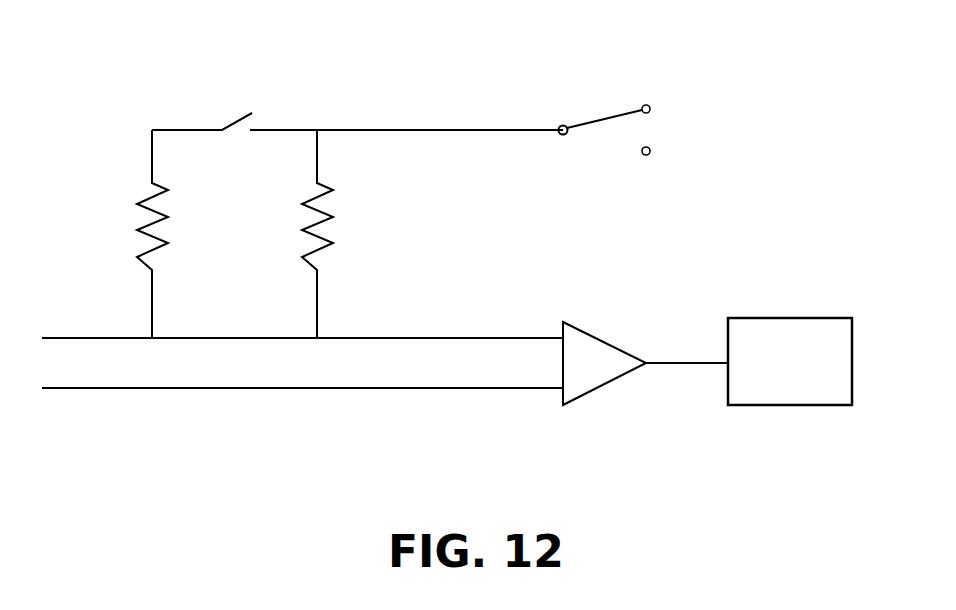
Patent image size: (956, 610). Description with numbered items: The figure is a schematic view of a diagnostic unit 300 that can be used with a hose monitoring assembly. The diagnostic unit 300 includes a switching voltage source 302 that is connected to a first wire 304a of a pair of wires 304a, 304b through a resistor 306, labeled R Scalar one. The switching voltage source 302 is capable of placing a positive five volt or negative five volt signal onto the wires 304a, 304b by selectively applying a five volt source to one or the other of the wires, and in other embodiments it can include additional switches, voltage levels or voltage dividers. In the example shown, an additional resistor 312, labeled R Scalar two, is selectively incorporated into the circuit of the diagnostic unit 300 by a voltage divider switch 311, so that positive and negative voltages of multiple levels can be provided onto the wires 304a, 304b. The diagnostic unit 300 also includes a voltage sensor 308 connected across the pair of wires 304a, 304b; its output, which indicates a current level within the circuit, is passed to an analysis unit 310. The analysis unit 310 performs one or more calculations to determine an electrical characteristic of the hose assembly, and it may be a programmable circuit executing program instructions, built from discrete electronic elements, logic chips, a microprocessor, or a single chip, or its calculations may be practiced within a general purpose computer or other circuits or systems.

The diagnostic unit 300 is at (212, 482).
The switching voltage source 302 is at (583, 75).
The first wire 304a is at (128, 338).
The second wire 304b is at (128, 388).
The resistor 306 is at (308, 223).
The voltage sensor 308 is at (590, 342).
The analysis unit 310 is at (788, 317).
The voltage divider switch 311 is at (230, 123).
The additional resistor 312 is at (145, 223).